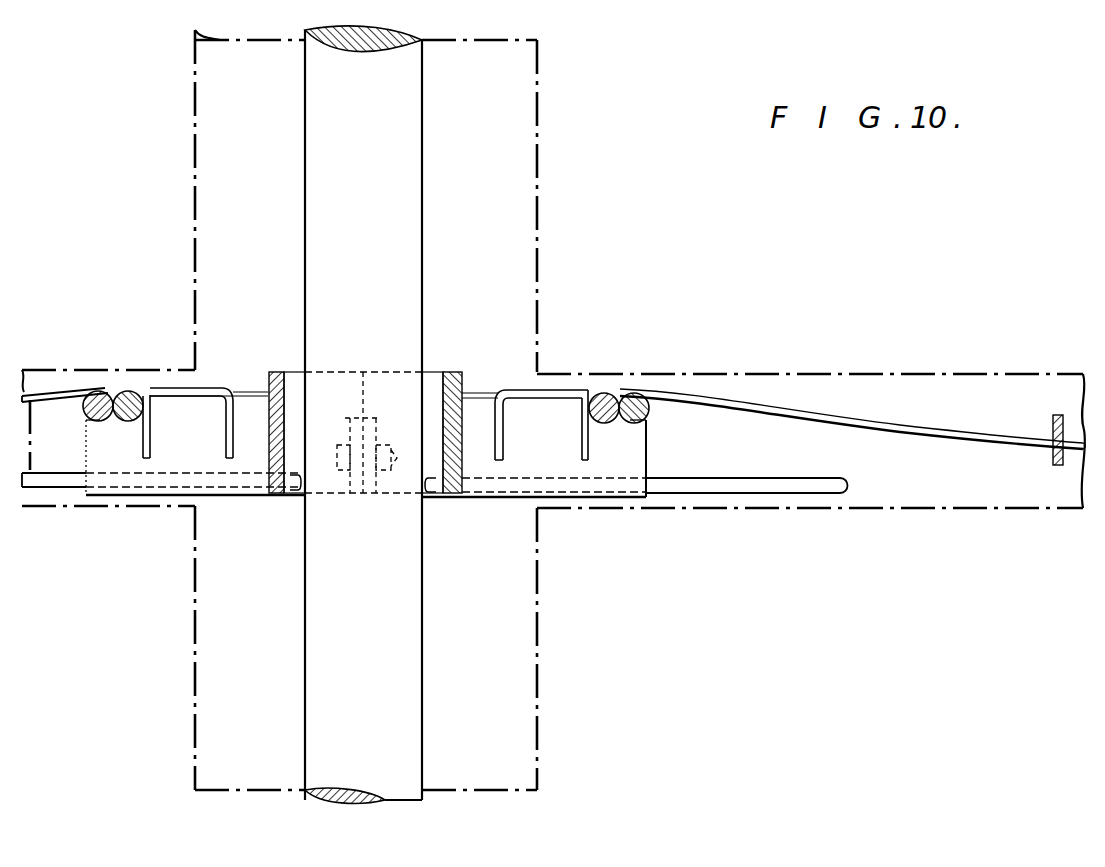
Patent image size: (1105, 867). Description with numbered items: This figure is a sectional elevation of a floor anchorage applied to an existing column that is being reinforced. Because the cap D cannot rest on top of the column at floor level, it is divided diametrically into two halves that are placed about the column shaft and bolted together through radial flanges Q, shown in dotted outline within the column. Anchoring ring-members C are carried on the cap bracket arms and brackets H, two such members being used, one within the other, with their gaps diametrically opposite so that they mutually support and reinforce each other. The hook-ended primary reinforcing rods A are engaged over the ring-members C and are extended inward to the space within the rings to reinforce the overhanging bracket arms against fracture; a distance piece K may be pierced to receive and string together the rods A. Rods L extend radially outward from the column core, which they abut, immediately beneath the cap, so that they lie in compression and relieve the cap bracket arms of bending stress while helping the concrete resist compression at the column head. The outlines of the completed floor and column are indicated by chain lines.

The primary reinforcing rods A is at (48, 392).
The anchoring ring-members C is at (103, 390).
The cap D is at (272, 378).
The brackets H is at (127, 455).
The rods L is at (56, 482).
The radial flanges Q is at (363, 490).
The distance pieces K is at (1053, 418).